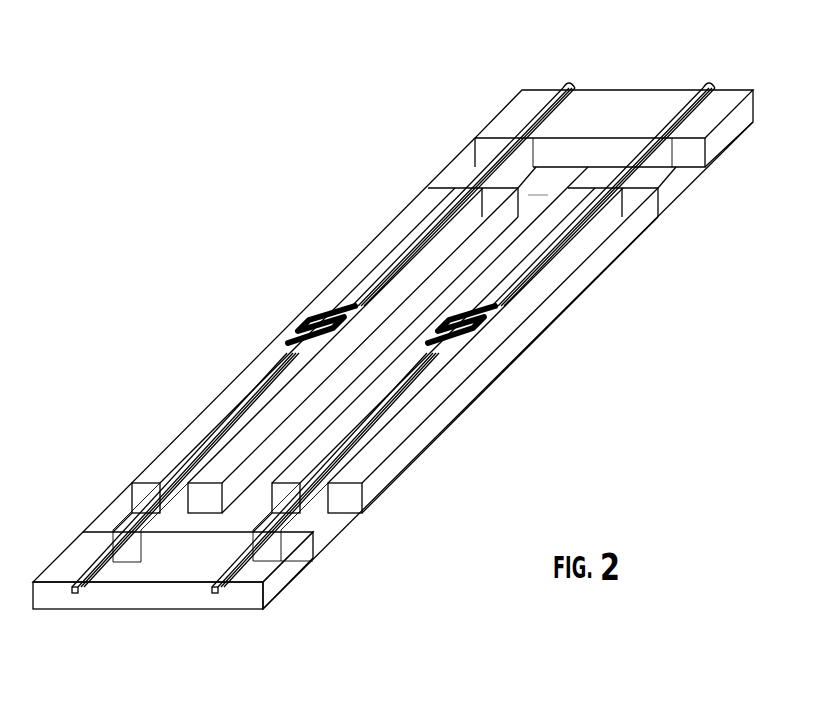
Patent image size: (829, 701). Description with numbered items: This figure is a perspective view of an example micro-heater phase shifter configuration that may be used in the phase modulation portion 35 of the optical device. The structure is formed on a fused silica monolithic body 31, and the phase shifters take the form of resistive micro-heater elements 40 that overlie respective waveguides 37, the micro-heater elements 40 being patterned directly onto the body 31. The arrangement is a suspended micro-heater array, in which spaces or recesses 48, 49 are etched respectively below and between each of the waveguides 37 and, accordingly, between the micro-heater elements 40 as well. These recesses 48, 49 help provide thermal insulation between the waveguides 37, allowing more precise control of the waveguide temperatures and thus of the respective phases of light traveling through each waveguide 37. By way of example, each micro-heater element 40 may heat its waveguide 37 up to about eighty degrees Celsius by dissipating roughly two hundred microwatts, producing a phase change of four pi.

The body 31 is at (421, 187).
The phase modulation portion 35 is at (392, 519).
The waveguide 37 is at (214, 594).
The micro-heater element 40 is at (289, 337).
The recess 48 is at (464, 157).
The recess 49 is at (539, 190).